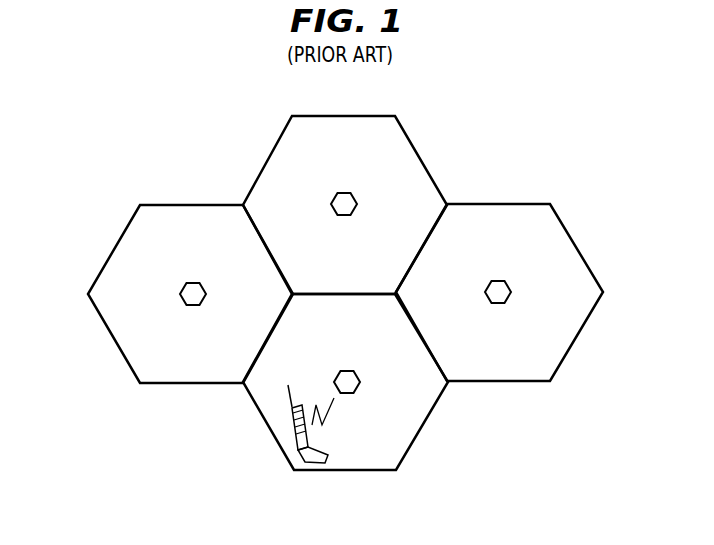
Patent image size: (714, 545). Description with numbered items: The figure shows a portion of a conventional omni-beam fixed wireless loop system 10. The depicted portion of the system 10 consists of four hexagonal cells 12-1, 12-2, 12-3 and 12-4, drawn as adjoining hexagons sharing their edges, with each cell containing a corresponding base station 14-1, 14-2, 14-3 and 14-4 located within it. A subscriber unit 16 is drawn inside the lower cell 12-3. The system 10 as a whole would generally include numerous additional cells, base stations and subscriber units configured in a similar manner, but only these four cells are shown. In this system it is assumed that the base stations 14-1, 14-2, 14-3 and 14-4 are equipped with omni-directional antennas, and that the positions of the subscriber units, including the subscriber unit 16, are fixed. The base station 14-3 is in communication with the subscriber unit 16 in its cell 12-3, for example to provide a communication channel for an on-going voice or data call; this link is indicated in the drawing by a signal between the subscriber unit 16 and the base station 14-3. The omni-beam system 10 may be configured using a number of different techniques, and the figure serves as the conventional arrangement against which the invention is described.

The omni-beam FWL system 10 is at (166, 126).
The hexagonal cell 12-1 is at (418, 153).
The hexagonal cell 12-2 is at (578, 247).
The hexagonal cell 12-3 is at (422, 428).
The hexagonal cell 12-4 is at (113, 253).
The base station 14-1 is at (350, 215).
The base station 14-2 is at (504, 303).
The base station 14-3 is at (352, 393).
The base station 14-4 is at (199, 305).
The subscriber unit 16 is at (300, 446).